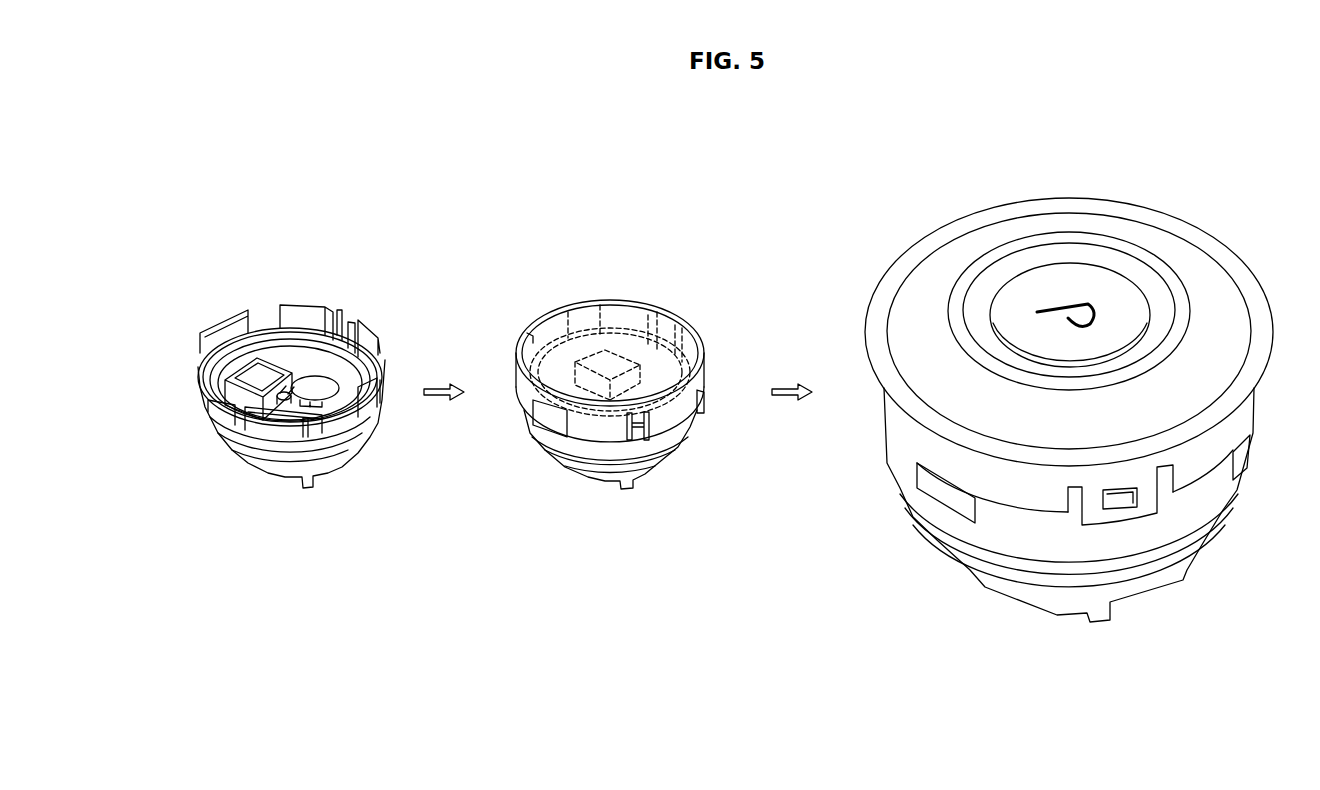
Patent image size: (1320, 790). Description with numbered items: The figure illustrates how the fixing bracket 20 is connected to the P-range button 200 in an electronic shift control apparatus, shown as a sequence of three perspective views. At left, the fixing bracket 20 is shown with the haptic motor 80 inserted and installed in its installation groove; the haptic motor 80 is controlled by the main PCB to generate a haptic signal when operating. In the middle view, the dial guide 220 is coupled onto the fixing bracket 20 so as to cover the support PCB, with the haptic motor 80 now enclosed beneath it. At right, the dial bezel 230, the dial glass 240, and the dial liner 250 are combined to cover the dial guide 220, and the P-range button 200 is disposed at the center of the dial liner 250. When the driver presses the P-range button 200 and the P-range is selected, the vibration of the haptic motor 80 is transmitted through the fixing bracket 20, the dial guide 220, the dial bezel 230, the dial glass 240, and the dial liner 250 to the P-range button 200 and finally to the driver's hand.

The fixing bracket 20 is at (268, 440).
The haptic motor 80 is at (252, 375).
The P-range button 200 is at (1063, 277).
The dial guide 220 is at (628, 313).
The dial bezel 230 is at (900, 273).
The dial glass 240 is at (1217, 303).
The dial liner 250 is at (1003, 277).